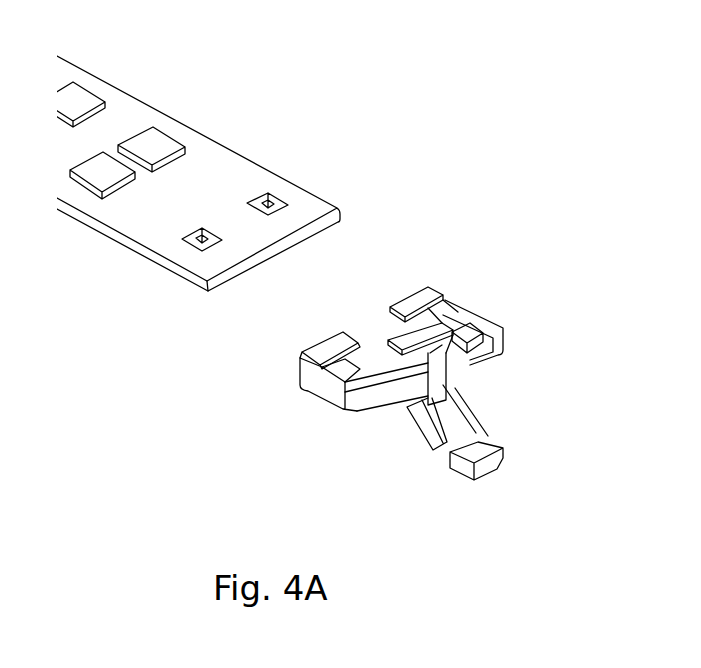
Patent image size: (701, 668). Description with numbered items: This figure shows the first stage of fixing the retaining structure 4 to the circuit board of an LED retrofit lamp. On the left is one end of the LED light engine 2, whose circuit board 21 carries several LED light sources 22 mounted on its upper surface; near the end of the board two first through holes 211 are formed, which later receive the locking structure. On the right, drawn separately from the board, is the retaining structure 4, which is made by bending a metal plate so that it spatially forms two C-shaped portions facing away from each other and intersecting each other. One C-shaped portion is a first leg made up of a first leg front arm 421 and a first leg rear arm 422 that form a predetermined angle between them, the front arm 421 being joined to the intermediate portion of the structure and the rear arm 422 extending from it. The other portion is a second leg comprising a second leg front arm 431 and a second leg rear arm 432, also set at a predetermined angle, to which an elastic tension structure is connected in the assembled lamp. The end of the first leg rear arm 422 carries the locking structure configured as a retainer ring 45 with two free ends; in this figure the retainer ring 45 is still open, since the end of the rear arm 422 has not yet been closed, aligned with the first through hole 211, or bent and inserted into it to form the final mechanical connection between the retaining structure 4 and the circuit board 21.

The LED light engine 2 is at (191, 195).
The circuit board 21 is at (213, 180).
The LED light source 22 is at (158, 142).
The first through hole 211 is at (266, 214).
The retaining structure 4 is at (449, 394).
The retainer ring 45 is at (327, 348).
The first leg front arm 421 is at (380, 393).
The first leg rear arm 422 is at (325, 392).
The second leg front arm 431 is at (455, 423).
The second leg rear arm 432 is at (488, 457).